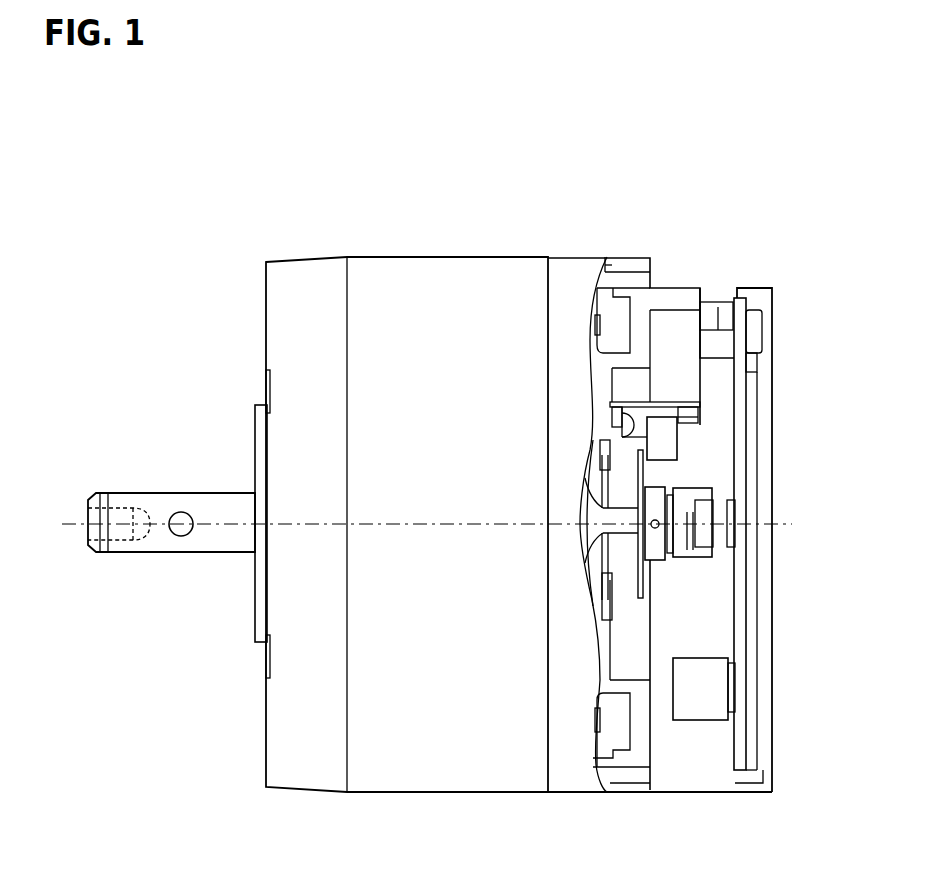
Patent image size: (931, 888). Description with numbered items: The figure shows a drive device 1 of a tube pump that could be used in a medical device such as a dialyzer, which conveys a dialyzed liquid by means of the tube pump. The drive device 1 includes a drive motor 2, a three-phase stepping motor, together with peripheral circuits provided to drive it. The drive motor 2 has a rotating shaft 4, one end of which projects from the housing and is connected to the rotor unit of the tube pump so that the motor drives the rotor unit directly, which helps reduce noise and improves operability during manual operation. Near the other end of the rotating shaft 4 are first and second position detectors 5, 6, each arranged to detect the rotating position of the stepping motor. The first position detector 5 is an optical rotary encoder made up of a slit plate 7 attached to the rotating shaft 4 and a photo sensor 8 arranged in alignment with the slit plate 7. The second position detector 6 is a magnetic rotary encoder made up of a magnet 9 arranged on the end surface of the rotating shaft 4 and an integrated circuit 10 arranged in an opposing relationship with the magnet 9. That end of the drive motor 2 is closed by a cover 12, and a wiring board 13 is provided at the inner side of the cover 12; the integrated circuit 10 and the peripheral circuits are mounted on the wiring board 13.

The drive device 1 is at (231, 183).
The drive motor 2 is at (391, 274).
The rotating shaft 4 is at (150, 506).
The first position detector 5 is at (665, 380).
The second position detector 6 is at (728, 490).
The slit plate 7 is at (645, 479).
The photo sensor 8 is at (672, 438).
The magnet 9 is at (705, 518).
The integrated circuit 10 is at (730, 535).
The cover 12 is at (763, 755).
The wiring board 13 is at (735, 623).